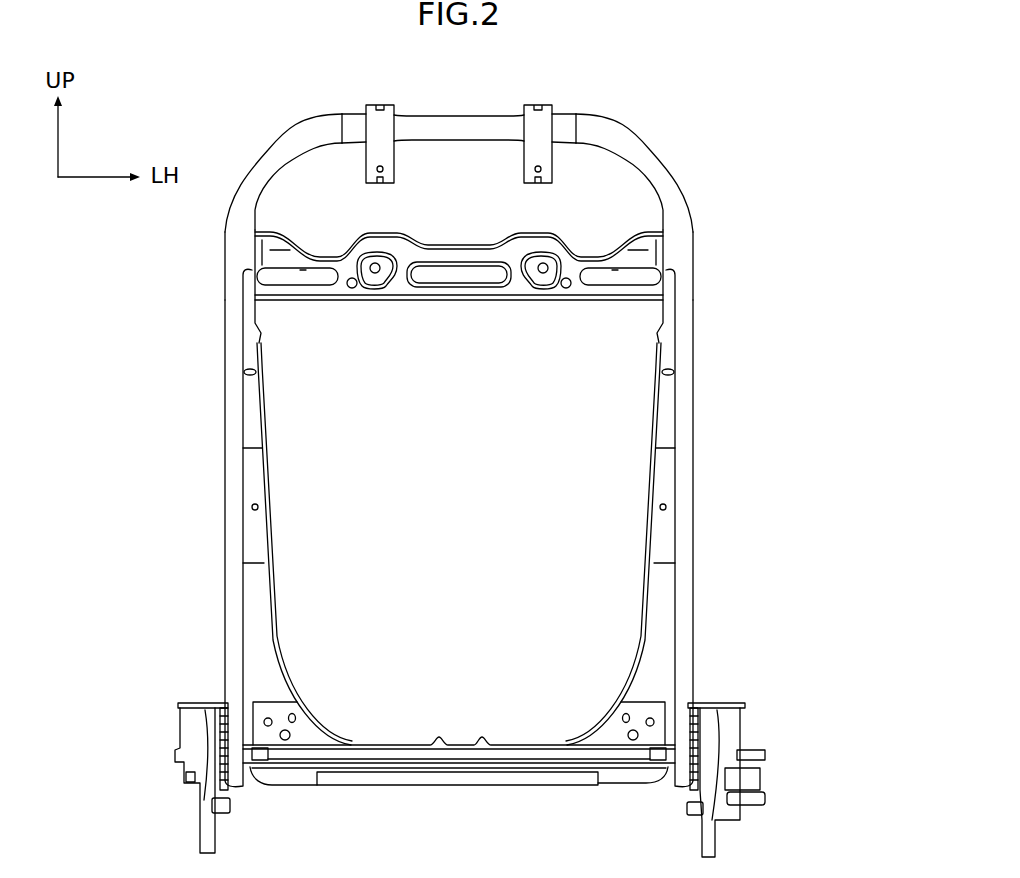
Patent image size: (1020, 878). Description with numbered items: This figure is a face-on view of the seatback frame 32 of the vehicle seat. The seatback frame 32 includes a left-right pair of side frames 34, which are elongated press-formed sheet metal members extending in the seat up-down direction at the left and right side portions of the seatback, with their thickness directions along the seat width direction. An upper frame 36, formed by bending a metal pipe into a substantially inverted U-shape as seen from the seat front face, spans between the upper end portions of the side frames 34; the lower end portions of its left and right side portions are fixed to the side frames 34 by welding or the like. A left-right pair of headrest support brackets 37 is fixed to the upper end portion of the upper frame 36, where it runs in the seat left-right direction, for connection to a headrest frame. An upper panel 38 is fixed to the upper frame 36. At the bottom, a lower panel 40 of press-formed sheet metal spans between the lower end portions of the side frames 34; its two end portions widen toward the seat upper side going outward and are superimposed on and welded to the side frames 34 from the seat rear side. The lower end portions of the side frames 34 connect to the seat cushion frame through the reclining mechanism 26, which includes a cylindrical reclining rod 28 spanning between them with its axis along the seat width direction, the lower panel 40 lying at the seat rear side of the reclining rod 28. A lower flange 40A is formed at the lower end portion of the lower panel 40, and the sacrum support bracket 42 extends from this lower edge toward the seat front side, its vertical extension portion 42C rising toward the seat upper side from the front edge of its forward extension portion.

The reclining mechanism 26 is at (789, 765).
The reclining rod 28 is at (460, 753).
The seatback frame 32 is at (496, 198).
The side frames 34 is at (225, 487).
The upper frame 36 is at (467, 120).
The headrest support brackets 37 is at (383, 122).
The upper panel 38 is at (460, 305).
The lower panel 40 is at (459, 747).
The lower flange 40A is at (287, 787).
The sacrum support bracket 42 is at (459, 815).
The vertical extension portion 42C is at (422, 781).